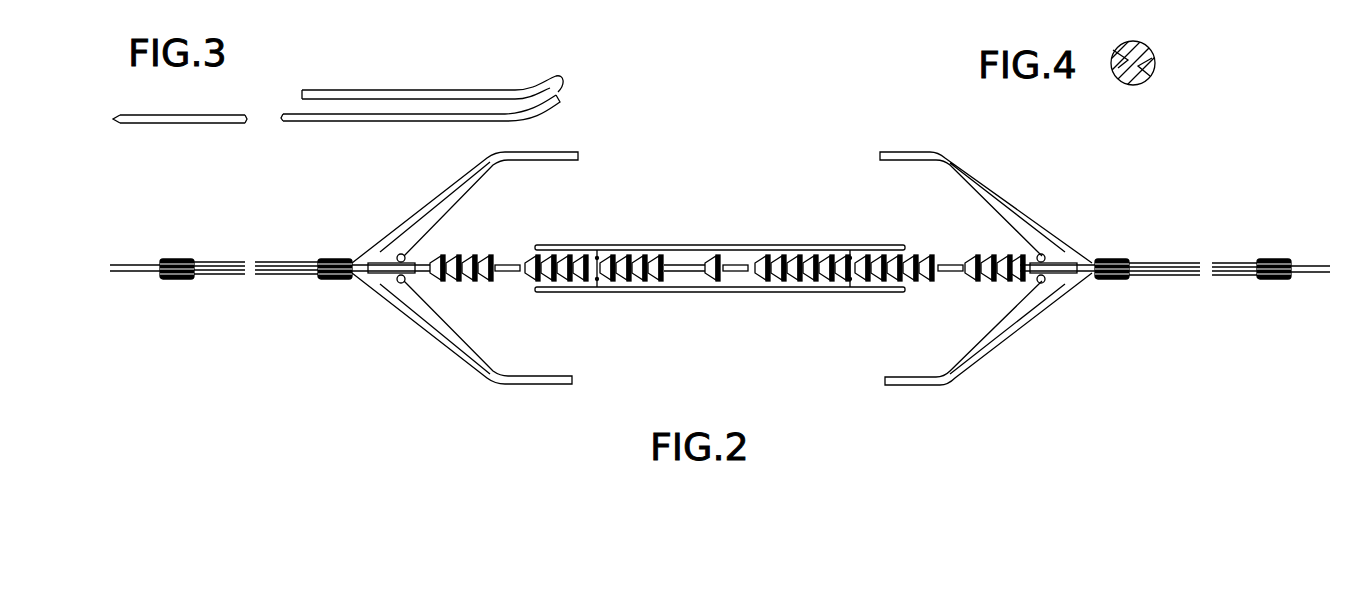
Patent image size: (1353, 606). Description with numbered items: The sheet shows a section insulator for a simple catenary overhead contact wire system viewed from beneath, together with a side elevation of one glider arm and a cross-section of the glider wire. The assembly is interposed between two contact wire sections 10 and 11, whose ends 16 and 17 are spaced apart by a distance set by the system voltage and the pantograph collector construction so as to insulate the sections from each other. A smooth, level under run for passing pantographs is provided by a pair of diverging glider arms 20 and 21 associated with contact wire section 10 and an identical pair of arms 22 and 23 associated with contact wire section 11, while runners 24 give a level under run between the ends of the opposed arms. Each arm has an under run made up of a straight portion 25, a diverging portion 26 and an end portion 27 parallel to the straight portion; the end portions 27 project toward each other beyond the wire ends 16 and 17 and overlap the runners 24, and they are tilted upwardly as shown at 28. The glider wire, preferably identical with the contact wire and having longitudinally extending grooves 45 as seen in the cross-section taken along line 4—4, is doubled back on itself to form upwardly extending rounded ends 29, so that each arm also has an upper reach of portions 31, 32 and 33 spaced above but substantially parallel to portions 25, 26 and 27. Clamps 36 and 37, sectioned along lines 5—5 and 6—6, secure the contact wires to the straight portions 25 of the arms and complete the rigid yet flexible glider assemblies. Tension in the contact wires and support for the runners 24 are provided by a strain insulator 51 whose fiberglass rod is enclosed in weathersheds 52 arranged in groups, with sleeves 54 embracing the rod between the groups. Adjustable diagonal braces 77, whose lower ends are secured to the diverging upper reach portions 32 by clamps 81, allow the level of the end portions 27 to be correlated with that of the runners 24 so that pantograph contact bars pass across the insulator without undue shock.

In FIG. 3, the section line 4— 4 is at (242, 142).
In FIG. 2, the section line 5— 5 is at (175, 295).
In FIG. 2, the section line 6— 6 is at (329, 295).
In FIG. 2, the contact wire section 10 is at (130, 264).
In FIG. 2, the contact wire section 11 is at (1312, 265).
In FIG. 2, the end of contact wire 16 is at (415, 264).
In FIG. 2, the end of contact wire 17 is at (1035, 262).
In FIG. 2, the glider arm 20 is at (440, 195).
In FIG. 2, the glider arm 21 is at (435, 342).
In FIG. 2, the glider arm 22 is at (1001, 189).
In FIG. 2, the glider arm 23 is at (1008, 341).
In FIG. 2, the runners 24 is at (760, 245).
In FIG. 3, the straight portion 25 is at (143, 127).
In FIG. 2, the straight portion 25 is at (228, 260).
In FIG. 4, the straight portion 25 is at (1155, 76).
In FIG. 3, the diverging portion 26 is at (455, 123).
In FIG. 2, the diverging portion 26 is at (392, 301).
In FIG. 2, the end portion 27 is at (526, 152).
In FIG. 3, the upward tilt 28 is at (562, 97).
In FIG. 2, the upward tilt 28 is at (578, 160).
In FIG. 3, the rounded end 29 is at (560, 80).
In FIG. 2, the rounded end 29 is at (578, 152).
In FIG. 3, the upper reach portion 31 is at (335, 91).
In FIG. 3, the diverging portion of upper reach 32 is at (458, 91).
In FIG. 3, the upper reach portion 33 is at (522, 92).
In FIG. 2, the clamp 36 is at (187, 258).
In FIG. 2, the clamp 37 is at (338, 259).
In FIG. 4, the longitudinally extending grooves 45 is at (1118, 52).
In FIG. 2, the strain insulator 51 is at (672, 258).
In FIG. 2, the weathersheds 52 is at (500, 262).
In FIG. 2, the sleeves 54 is at (680, 280).
In FIG. 2, the adjustable diagonal braces 77 is at (983, 221).
In FIG. 2, the clamps 81 is at (488, 171).